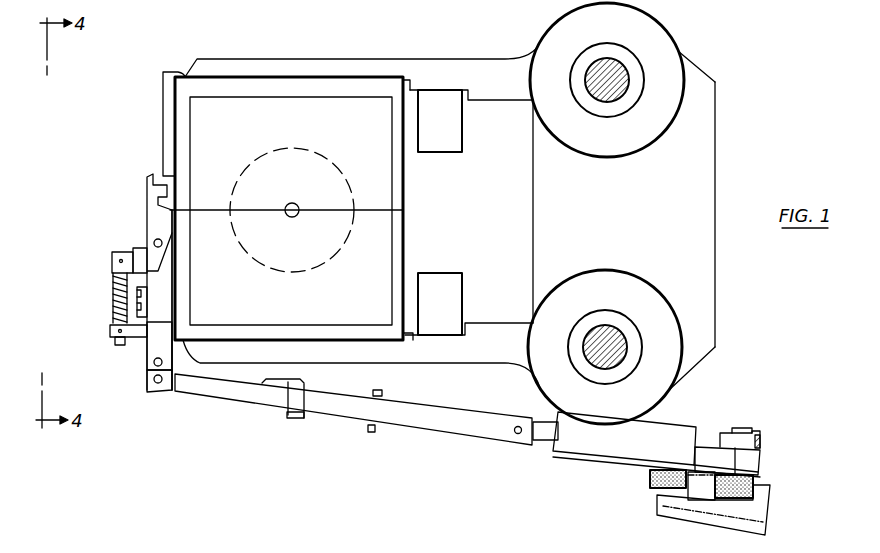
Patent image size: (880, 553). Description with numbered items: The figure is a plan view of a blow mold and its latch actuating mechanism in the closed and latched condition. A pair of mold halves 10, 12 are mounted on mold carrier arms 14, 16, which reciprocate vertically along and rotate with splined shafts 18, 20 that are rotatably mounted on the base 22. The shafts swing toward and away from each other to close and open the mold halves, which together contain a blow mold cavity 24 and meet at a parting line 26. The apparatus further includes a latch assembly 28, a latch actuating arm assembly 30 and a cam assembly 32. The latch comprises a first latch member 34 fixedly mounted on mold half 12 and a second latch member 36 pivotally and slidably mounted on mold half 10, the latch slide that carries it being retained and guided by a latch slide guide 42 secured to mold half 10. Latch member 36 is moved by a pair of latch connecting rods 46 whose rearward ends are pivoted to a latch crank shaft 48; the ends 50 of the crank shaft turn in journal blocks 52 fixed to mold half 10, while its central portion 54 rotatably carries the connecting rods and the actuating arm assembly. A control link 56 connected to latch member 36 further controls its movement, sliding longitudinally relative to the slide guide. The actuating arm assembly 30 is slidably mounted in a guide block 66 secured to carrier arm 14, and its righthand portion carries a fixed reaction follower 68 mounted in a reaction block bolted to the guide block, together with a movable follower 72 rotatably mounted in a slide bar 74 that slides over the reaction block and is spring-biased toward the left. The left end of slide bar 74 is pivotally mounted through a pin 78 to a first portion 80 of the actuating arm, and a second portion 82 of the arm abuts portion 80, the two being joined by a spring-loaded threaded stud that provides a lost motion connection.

The mold half 10 is at (326, 308).
The mold half 12 is at (300, 129).
The mold carrier arm 14 is at (429, 372).
The mold carrier arm 16 is at (316, 56).
The splined shaft 18 is at (627, 339).
The splined shaft 20 is at (627, 72).
The base 22 is at (629, 223).
The blow mold cavity 24 is at (343, 190).
The parting line 26 is at (208, 209).
The latch assembly 28 is at (131, 233).
The latch actuating arm assembly 30 is at (420, 437).
The cam assembly 32 is at (772, 490).
The first latch member 34 is at (162, 98).
The second latch member 36 is at (147, 191).
The latch slide guide 42 is at (110, 330).
The latch connecting rod 46 is at (167, 281).
The latch crank shaft 48 is at (161, 384).
The end of crank shaft 50 is at (154, 365).
The journal block 52 is at (150, 350).
The central portion of crank shaft 54 is at (151, 388).
The control link 56 is at (113, 288).
The guide block 66 is at (680, 418).
The reaction follower 68 is at (649, 479).
The movable follower 72 is at (755, 498).
The slide bar 74 is at (762, 463).
The pin 78 is at (517, 435).
The first portion of the actuating arm 80 is at (480, 443).
The second portion of the actuating arm 82 is at (233, 407).